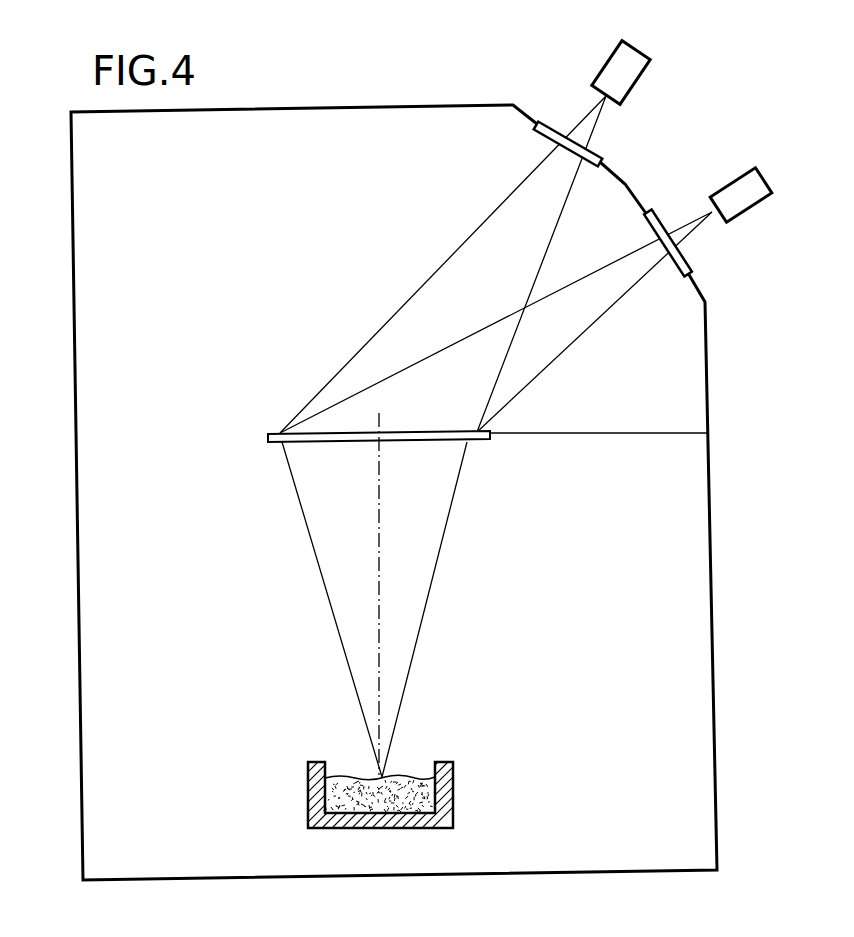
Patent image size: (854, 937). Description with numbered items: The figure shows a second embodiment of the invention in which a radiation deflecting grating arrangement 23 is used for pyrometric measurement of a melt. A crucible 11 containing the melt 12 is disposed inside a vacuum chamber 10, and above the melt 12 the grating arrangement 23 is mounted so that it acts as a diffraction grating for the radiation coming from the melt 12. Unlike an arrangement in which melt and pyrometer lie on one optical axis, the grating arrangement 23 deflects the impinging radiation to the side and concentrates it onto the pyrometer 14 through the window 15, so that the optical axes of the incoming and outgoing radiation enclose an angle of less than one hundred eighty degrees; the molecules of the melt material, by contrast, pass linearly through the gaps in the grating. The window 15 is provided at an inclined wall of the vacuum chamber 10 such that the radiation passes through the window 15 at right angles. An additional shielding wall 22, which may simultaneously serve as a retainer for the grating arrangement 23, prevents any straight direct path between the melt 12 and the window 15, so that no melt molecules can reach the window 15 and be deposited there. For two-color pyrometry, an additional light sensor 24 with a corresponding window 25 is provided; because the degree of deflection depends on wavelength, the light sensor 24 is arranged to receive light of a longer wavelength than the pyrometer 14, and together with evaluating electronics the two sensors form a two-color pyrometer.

The vacuum chamber 10 is at (77, 576).
The crucible 11 is at (447, 795).
The melt 12 is at (418, 778).
The pyrometer 14 is at (632, 53).
The window 15 is at (558, 125).
The shielding wall 22 is at (580, 435).
The grating arrangement 23 is at (443, 432).
The light sensor 24 is at (757, 180).
The window 25 is at (660, 220).